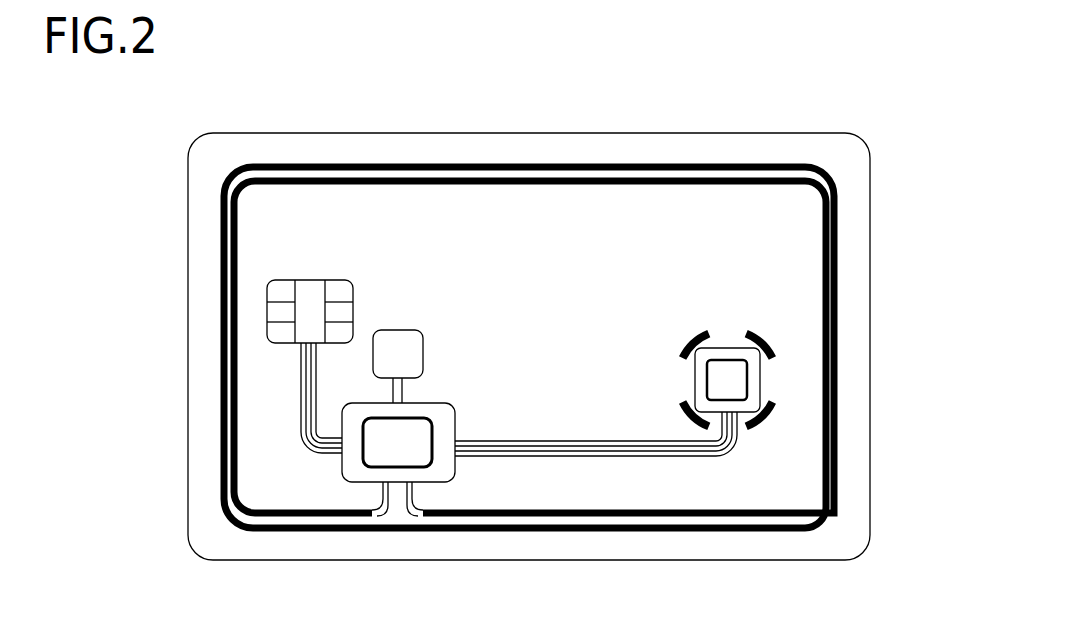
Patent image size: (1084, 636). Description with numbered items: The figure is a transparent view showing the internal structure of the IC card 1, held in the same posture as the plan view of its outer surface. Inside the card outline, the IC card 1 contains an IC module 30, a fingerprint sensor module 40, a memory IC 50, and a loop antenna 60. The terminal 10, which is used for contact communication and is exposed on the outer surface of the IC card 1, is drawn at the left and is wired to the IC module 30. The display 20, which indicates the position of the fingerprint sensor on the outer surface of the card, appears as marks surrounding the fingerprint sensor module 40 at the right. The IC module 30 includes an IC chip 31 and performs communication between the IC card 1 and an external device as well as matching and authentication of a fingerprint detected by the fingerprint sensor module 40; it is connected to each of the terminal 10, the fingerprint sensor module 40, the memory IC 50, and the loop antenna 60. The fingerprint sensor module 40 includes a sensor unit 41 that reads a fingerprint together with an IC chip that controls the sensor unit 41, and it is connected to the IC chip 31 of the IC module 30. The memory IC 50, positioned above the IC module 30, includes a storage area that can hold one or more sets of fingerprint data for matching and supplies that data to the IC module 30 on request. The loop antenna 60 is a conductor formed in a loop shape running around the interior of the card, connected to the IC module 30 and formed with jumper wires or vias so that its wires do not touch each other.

The IC card 1 is at (795, 118).
The terminal 10 is at (308, 296).
The display 20 is at (768, 342).
The IC module 30 is at (358, 470).
The IC chip 31 is at (423, 447).
The fingerprint sensor module 40 is at (753, 378).
The sensor unit 41 is at (740, 390).
The memory IC 50 is at (393, 348).
The loop antenna 60 is at (609, 178).